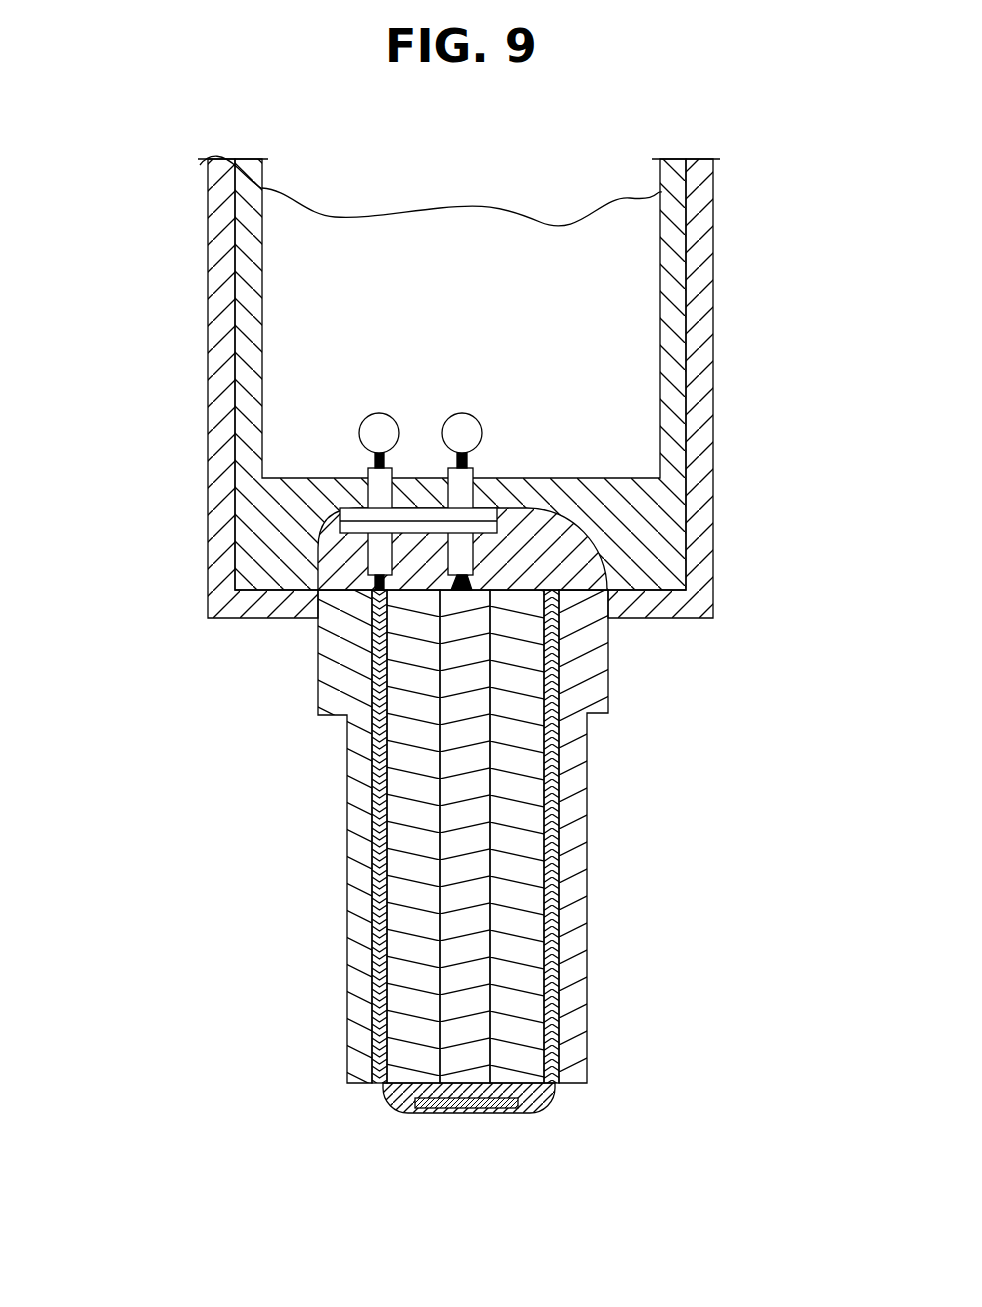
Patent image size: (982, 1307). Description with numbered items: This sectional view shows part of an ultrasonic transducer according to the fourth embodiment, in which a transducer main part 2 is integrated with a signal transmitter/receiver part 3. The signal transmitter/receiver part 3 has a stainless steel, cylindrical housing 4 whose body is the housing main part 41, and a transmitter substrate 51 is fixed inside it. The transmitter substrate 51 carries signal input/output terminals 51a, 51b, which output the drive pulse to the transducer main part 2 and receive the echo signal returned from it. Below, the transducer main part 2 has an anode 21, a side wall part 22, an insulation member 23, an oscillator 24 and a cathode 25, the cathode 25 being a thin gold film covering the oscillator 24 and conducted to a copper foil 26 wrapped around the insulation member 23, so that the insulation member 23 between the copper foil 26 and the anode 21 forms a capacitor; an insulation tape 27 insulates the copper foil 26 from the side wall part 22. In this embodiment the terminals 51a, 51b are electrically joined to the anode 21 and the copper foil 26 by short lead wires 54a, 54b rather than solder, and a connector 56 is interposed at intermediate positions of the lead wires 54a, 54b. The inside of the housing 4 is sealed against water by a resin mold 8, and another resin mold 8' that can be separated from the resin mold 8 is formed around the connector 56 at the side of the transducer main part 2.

The transducer main part 2 is at (462, 902).
The signal transmitter/receiver part 3 is at (449, 377).
The housing 4 is at (713, 398).
The resin mold 8 is at (379, 363).
The another resin mold 8' is at (337, 549).
The anode 21 is at (470, 1047).
The side wall part 22 is at (582, 683).
The insulation member 23 is at (520, 984).
The oscillator 24 is at (473, 1092).
The cathode 25 is at (420, 1108).
The copper foil 26 is at (560, 846).
The insulation tape 27 is at (555, 752).
The housing main part 41 is at (212, 232).
The transmitter substrate 51 is at (633, 325).
The signal input/output terminal 51a is at (475, 408).
The signal input/output terminal 51b is at (365, 419).
The lead wire 54a is at (462, 557).
The lead wire 54b is at (377, 566).
The connector 56 is at (482, 512).